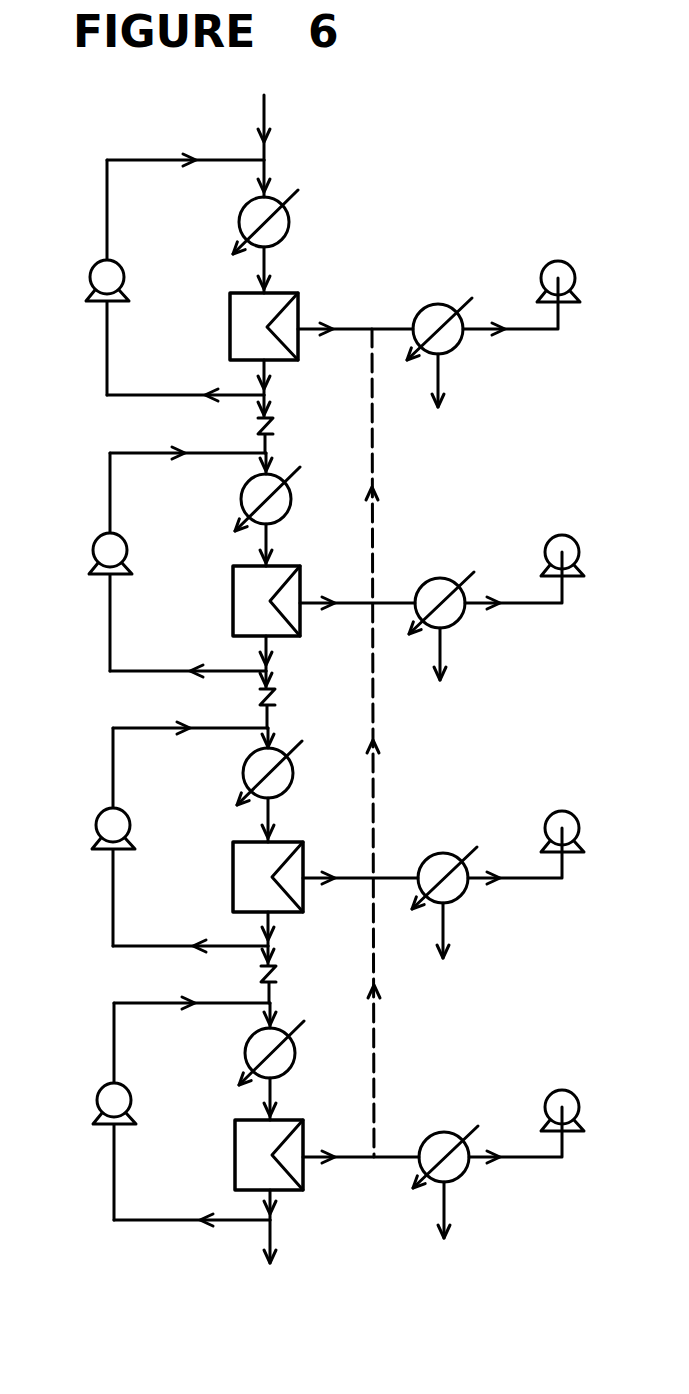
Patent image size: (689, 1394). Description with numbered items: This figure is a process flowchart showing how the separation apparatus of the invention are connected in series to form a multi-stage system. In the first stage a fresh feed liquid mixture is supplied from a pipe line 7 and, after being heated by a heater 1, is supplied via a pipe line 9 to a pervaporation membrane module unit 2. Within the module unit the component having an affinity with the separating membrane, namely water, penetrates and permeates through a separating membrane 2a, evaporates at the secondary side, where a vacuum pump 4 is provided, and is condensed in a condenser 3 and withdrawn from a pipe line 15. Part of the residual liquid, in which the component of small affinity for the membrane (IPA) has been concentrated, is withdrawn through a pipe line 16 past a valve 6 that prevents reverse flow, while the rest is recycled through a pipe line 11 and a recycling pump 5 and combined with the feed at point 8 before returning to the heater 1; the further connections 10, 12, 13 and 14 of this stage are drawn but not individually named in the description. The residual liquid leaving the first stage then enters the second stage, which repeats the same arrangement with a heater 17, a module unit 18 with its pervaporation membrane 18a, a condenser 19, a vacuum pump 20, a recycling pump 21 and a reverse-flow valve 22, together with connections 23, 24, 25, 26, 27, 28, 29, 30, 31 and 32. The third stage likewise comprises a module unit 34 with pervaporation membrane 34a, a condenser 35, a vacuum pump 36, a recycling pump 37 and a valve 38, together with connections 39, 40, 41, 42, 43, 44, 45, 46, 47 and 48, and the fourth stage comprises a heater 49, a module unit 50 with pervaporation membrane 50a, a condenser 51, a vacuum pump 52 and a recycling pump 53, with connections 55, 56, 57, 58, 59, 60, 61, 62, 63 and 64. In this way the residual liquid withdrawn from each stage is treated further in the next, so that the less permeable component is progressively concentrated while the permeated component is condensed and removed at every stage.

The heater 1 is at (257, 218).
The module unit 2 is at (247, 321).
The pervaporation membrane 2a is at (266, 326).
The condenser 3 is at (437, 317).
The vacuum pump 4 is at (551, 269).
The recycling pump 5 is at (96, 277).
The valve 6 is at (250, 431).
The pipe line 7 is at (277, 122).
The combining point 8 is at (276, 169).
The pipe line 9 is at (276, 270).
The liquid stream 10 is at (287, 377).
The pipe line 11 is at (185, 409).
The pumped recycle stream 12 is at (185, 183).
The vapor stream 13 is at (355, 347).
The stream to pump 14 is at (510, 323).
The pipe line 15 is at (463, 380).
The pipe line 16 is at (287, 407).
The heater 17 is at (256, 495).
The module unit 18 is at (244, 589).
The pervaporation membrane 18a is at (267, 601).
The condenser 19 is at (431, 590).
The vacuum pump 20 is at (550, 539).
The recycling pump 21 is at (93, 562).
The valve 22 is at (244, 703).
The heat exchanger / vapor return line 23 is at (314, 743).
The stream to heat exchanger 24 is at (290, 462).
The cooled stream 25 is at (291, 545).
The liquid stream 26 is at (289, 655).
The recycle liquid stream 27 is at (188, 689).
The pumped recycle stream 28 is at (188, 471).
The vapor stream 29 is at (357, 622).
The stream to pump 30 is at (513, 599).
The condensate stream 31 is at (462, 654).
The liquid stream to valve 32 is at (290, 686).
The module unit 34 is at (241, 873).
The pervaporation membrane 34a is at (269, 877).
The condenser 35 is at (432, 869).
The vacuum pump 36 is at (545, 818).
The recycling pump 37 is at (93, 837).
The valve 38 is at (244, 981).
The vapor return line 39 is at (407, 771).
The stream to heat exchanger 40 is at (288, 726).
The cooled stream 41 is at (289, 820).
The liquid stream 42 is at (293, 933).
The recycle liquid stream 43 is at (190, 964).
The pumped recycle stream 44 is at (190, 748).
The vapor stream 45 is at (360, 896).
The stream to pump 46 is at (515, 876).
The condensate stream 47 is at (465, 930).
The liquid stream to valve 48 is at (293, 962).
The heater 49 is at (254, 1053).
The module unit 50 is at (239, 1150).
The pervaporation membrane 50a is at (270, 1155).
The condenser 51 is at (432, 1146).
The vacuum pump 52 is at (543, 1098).
The recycling pump 53 is at (93, 1111).
The vapor return line 55 is at (406, 1042).
The stream to heat exchanger 56 is at (290, 1011).
The cooled stream 57 is at (291, 1099).
The liquid stream 58 is at (292, 1212).
The recycle liquid stream 59 is at (192, 1240).
The pumped recycle stream 60 is at (192, 1022).
The vapor stream 61 is at (361, 1175).
The stream to pump 62 is at (515, 1152).
The condensate stream 63 is at (464, 1210).
The product liquid stream 64 is at (291, 1247).